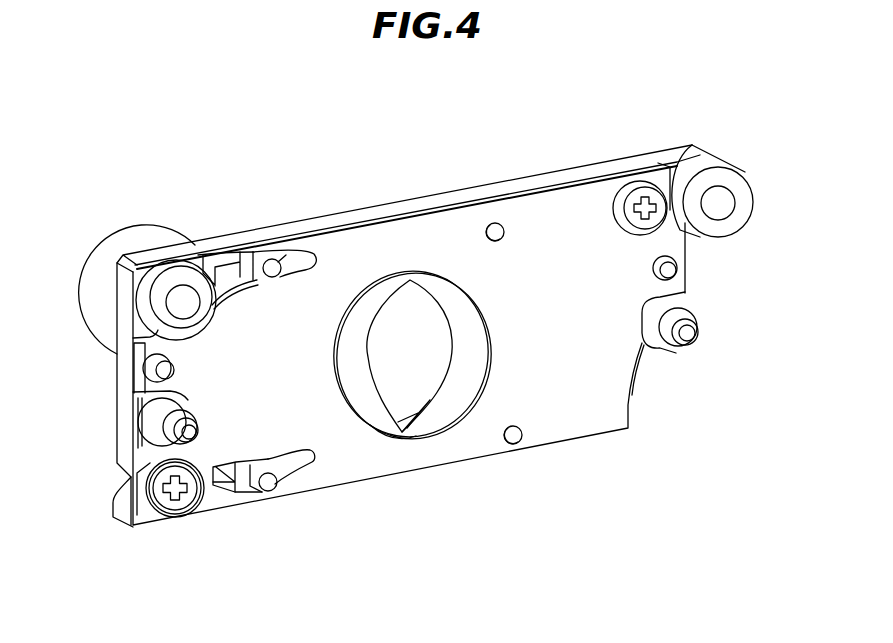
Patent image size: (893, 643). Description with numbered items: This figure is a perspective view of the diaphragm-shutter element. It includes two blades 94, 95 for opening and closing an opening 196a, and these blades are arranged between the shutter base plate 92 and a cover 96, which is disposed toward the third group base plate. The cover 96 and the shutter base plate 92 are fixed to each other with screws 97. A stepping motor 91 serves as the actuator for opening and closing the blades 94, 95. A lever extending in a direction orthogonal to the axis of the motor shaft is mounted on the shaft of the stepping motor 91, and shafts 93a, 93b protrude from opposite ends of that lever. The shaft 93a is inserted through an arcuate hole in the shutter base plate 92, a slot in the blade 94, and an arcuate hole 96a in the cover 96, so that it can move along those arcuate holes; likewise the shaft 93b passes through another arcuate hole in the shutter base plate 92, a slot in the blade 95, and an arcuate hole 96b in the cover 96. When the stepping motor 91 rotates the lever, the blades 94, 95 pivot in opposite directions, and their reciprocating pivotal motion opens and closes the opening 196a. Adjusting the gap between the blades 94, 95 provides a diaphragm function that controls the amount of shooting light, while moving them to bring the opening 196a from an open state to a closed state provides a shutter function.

The stepping motor 91 is at (162, 232).
The shutter base plate 92 is at (426, 200).
The shaft 93a is at (270, 262).
The shaft 93b is at (268, 492).
The blade 94 is at (455, 298).
The blade 95 is at (385, 302).
The cover 96 is at (485, 442).
The arcuate hole 96a is at (305, 252).
The arcuate hole 96b is at (310, 468).
The opening 196a is at (416, 436).
The screws 97 is at (650, 183).